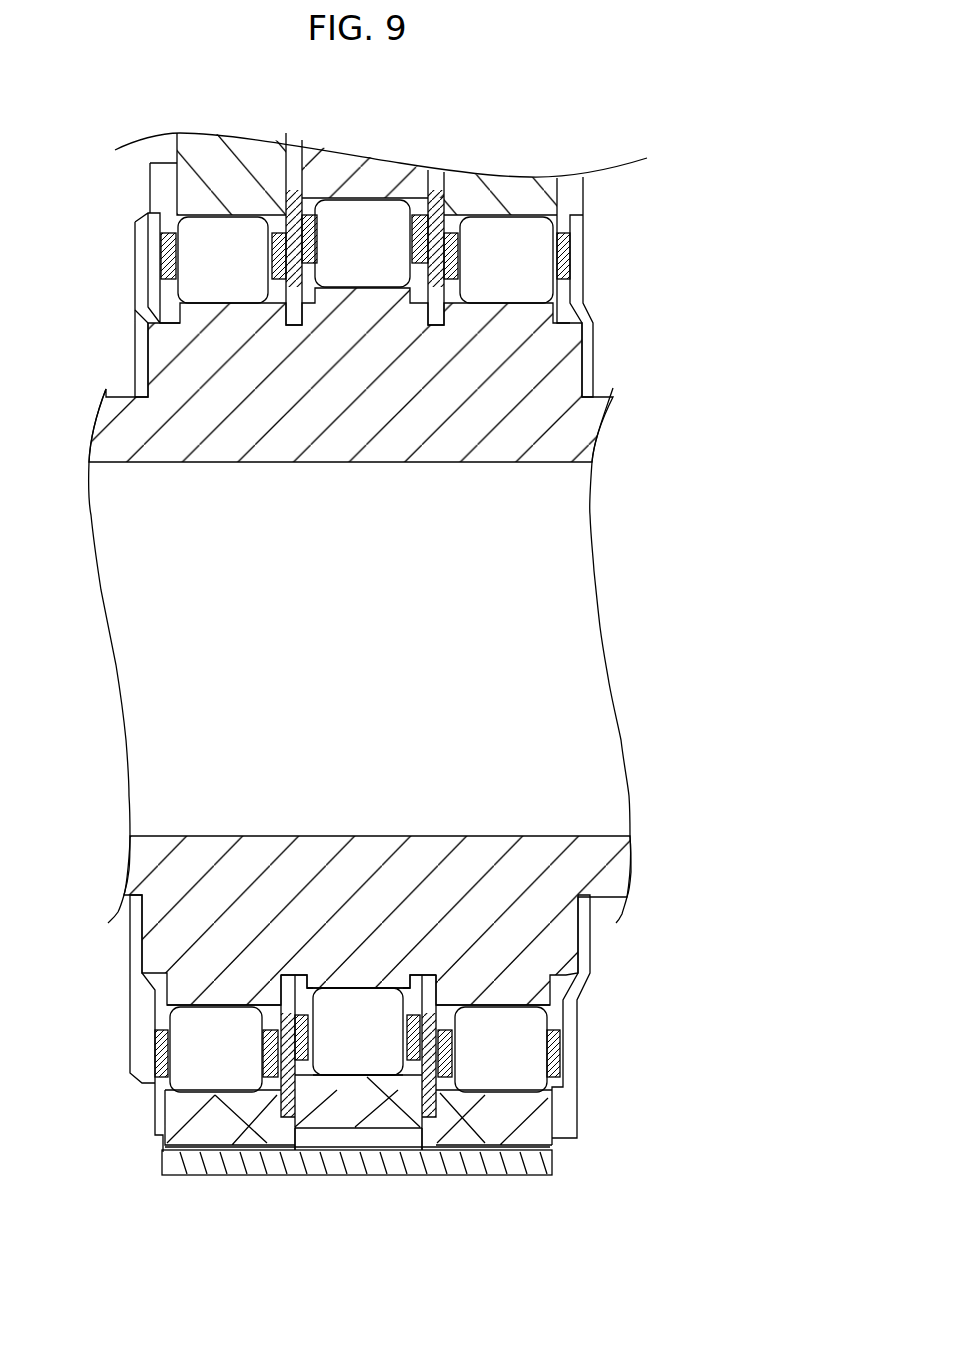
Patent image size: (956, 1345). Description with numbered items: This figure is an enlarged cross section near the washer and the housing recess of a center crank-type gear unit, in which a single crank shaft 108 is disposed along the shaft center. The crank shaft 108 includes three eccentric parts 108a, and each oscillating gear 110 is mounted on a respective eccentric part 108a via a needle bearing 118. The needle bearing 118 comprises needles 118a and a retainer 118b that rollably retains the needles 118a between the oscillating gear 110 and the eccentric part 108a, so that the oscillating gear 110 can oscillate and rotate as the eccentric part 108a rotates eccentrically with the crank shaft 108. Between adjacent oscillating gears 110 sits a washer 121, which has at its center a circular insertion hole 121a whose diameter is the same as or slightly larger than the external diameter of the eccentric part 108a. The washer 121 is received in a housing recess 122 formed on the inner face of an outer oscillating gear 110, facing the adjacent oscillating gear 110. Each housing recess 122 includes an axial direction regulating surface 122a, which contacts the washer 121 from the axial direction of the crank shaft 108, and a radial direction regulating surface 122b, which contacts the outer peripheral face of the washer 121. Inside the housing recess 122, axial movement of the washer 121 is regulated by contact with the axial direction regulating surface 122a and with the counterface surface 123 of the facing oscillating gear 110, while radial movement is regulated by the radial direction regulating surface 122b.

The crank shaft 108 is at (461, 880).
The eccentric part 108a is at (508, 995).
The oscillating gear 110 is at (320, 1117).
The needle bearing 118 is at (212, 1105).
The needle 118a is at (353, 1068).
The retainer 118b is at (403, 1040).
The washer 121 is at (262, 1053).
The insertion hole 121a is at (429, 1012).
The housing recess 122 is at (398, 1075).
The axial direction regulating surface 122a is at (418, 202).
The radial direction regulating surface 122b is at (278, 187).
The counterface surface 123 is at (293, 1090).